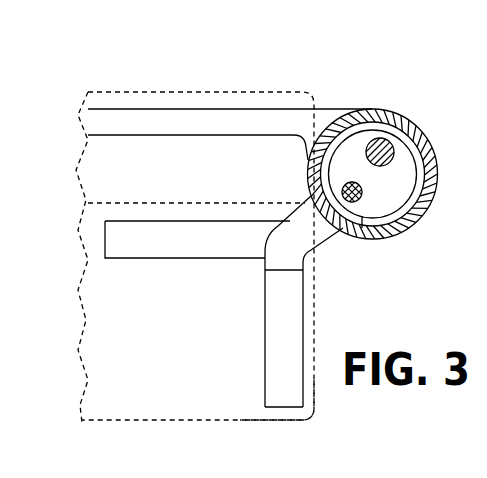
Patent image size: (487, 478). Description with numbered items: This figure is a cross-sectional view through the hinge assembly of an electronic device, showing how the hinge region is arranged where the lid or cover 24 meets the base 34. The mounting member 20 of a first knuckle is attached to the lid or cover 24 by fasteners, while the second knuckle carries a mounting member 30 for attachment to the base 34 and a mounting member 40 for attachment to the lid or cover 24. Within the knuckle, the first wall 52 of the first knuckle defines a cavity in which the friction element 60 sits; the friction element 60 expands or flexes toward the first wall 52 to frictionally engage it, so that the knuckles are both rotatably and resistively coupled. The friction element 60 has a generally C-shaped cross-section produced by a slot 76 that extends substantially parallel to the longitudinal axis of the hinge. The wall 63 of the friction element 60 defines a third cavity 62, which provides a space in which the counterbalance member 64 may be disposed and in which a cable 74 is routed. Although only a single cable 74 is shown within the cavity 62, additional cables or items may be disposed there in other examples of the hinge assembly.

The mounting member 20 is at (189, 136).
The lid or cover 24 is at (200, 90).
The mounting member 30 is at (265, 371).
The base 34 is at (258, 428).
The mounting member 40 is at (172, 259).
The first wall 52 is at (315, 190).
The friction element 60 is at (371, 164).
The third cavity 62 is at (396, 178).
The wall 63 is at (405, 210).
The counterbalance member 64 is at (394, 160).
The cable 74 is at (304, 156).
The slot 76 is at (342, 232).